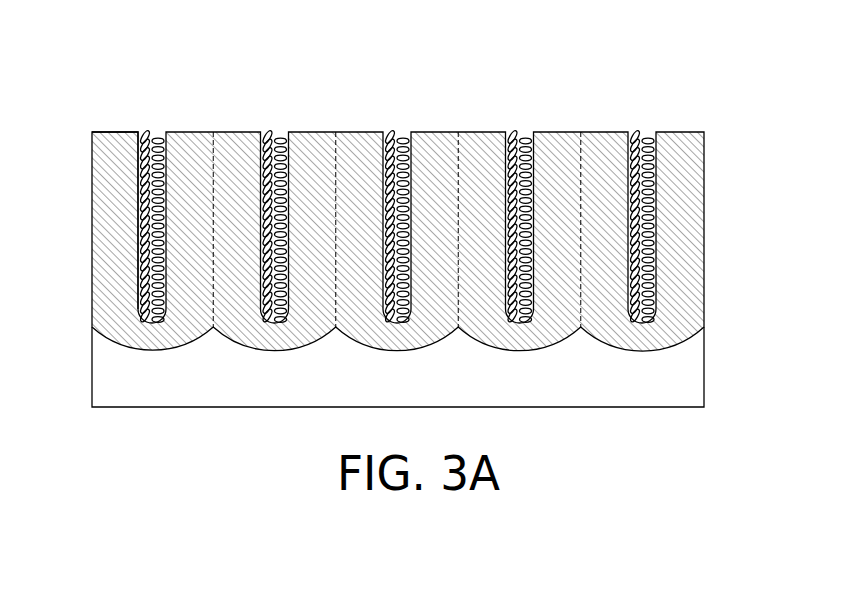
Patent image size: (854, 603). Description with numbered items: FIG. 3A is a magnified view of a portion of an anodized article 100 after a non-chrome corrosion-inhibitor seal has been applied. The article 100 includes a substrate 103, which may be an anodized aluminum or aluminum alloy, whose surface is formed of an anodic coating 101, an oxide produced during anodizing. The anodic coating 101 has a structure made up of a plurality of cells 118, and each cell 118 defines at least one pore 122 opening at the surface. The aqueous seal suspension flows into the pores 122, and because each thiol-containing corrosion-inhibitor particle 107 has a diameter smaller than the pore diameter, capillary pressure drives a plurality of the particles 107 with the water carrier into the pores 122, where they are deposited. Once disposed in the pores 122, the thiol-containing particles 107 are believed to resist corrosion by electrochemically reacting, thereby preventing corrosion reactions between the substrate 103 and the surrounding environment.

The article 100 is at (673, 51).
The anodic coating 101 is at (92, 234).
The substrate 103 is at (92, 368).
The thiol-containing corrosion-inhibitor particle 107 is at (275, 130).
The cell 118 is at (110, 130).
The pore 122 is at (148, 127).